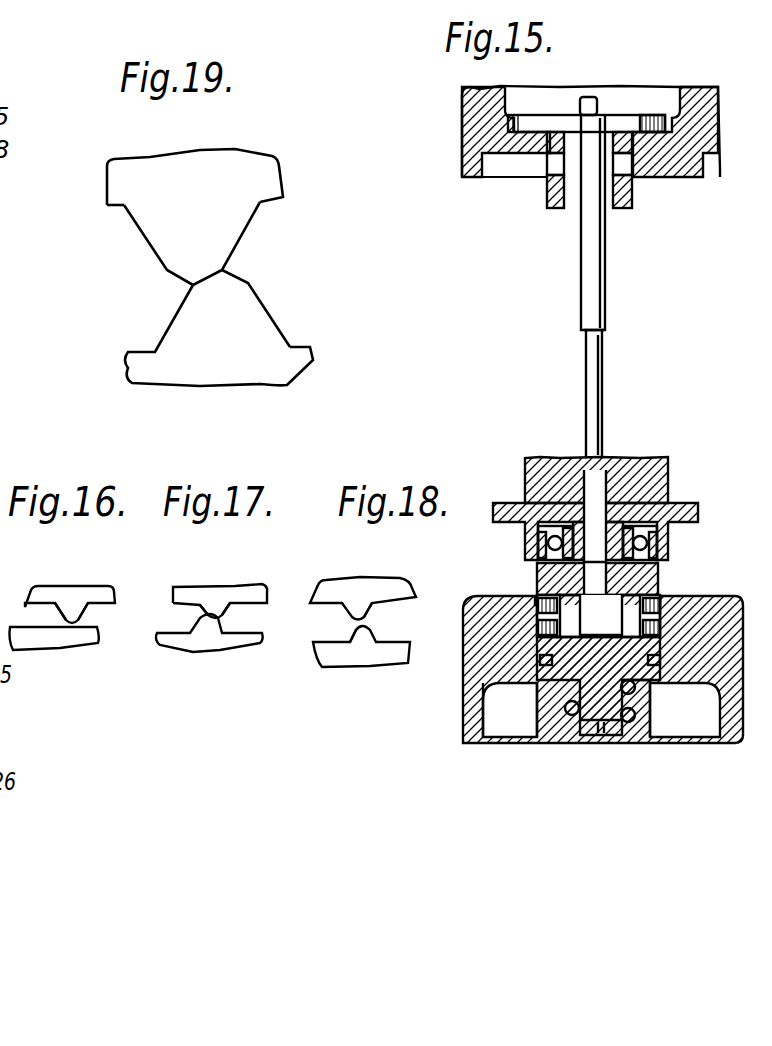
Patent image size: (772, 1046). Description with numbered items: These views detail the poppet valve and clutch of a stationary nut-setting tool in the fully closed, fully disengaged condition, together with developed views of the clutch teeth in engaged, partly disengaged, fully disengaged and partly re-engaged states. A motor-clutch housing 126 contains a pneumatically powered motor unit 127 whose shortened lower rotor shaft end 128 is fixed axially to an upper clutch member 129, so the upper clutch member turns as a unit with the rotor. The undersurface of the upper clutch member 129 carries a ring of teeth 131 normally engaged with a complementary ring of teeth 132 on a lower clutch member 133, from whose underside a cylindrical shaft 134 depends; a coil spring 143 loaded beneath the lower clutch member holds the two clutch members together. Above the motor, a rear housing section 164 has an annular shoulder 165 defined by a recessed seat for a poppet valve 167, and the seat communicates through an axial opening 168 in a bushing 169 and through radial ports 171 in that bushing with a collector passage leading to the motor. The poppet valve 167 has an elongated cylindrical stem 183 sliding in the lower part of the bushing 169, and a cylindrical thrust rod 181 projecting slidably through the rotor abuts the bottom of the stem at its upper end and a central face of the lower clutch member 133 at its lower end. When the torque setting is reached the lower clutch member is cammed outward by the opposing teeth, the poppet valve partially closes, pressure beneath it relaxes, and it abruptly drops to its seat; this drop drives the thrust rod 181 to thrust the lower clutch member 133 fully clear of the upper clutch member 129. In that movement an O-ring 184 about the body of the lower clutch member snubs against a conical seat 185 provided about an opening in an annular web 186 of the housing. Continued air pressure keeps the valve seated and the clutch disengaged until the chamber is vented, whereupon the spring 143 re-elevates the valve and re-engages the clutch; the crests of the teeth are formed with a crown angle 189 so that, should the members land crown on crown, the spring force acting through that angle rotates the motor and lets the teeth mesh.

In FIG. 15, the motor-clutch housing 126 is at (735, 728).
In FIG. 15, the motor unit 127 is at (657, 456).
In FIG. 15, the lower rotor shaft end 128 is at (537, 580).
In FIG. 15, the upper clutch member 129 is at (662, 566).
In FIG. 19, the upper clutch member 129 is at (112, 212).
In FIG. 16, the upper clutch member 129 is at (122, 594).
In FIG. 17, the upper clutch member 129 is at (220, 601).
In FIG. 18, the upper clutch member 129 is at (410, 586).
In FIG. 15, the teeth 131 is at (538, 604).
In FIG. 19, the teeth 131 is at (238, 248).
In FIG. 16, the teeth 131 is at (75, 610).
In FIG. 17, the teeth 131 is at (218, 612).
In FIG. 18, the teeth 131 is at (360, 608).
In FIG. 15, the teeth 132 is at (538, 628).
In FIG. 19, the teeth 132 is at (270, 305).
In FIG. 16, the teeth 132 is at (50, 612).
In FIG. 17, the teeth 132 is at (192, 612).
In FIG. 18, the teeth 132 is at (364, 638).
In FIG. 15, the lower clutch member 133 is at (650, 738).
In FIG. 19, the lower clutch member 133 is at (150, 348).
In FIG. 16, the lower clutch member 133 is at (86, 636).
In FIG. 17, the lower clutch member 133 is at (209, 633).
In FIG. 18, the lower clutch member 133 is at (393, 672).
In FIG. 15, the cylindrical shaft 134 is at (606, 736).
In FIG. 15, the coil spring 143 is at (575, 722).
In FIG. 15, the rear housing section 164 is at (472, 130).
In FIG. 15, the annular shoulder 165 is at (665, 122).
In FIG. 15, the poppet valve 167 is at (525, 108).
In FIG. 15, the axial opening 168 is at (668, 135).
In FIG. 15, the bushing 169 is at (628, 205).
In FIG. 15, the radial ports 171 is at (548, 195).
In FIG. 15, the thrust rod 181 is at (592, 375).
In FIG. 15, the stem 183 is at (596, 292).
In FIG. 15, the O-ring 184 is at (665, 660).
In FIG. 15, the conical seat 185 is at (672, 670).
In FIG. 15, the annular web 186 is at (530, 700).
In FIG. 19, the crown angle 189 is at (175, 280).